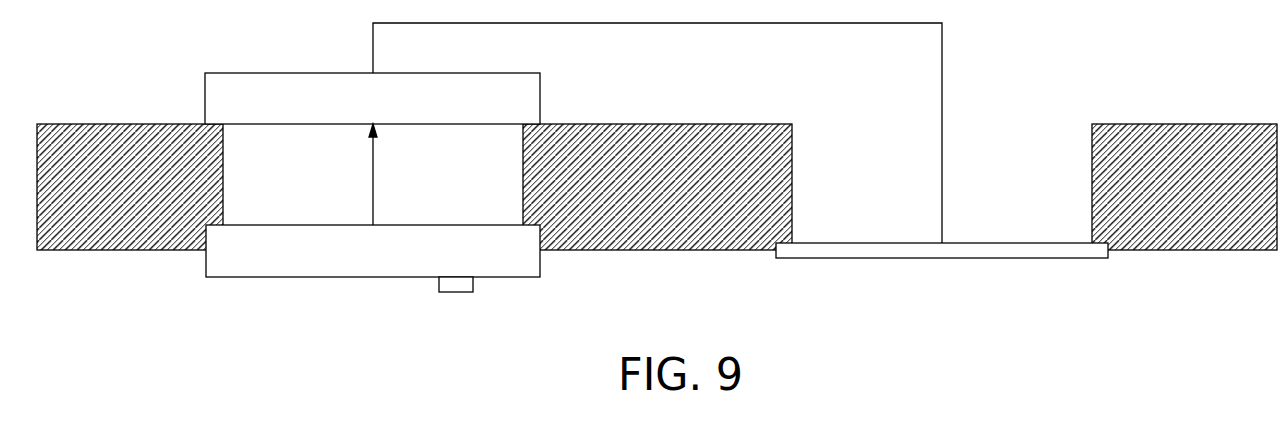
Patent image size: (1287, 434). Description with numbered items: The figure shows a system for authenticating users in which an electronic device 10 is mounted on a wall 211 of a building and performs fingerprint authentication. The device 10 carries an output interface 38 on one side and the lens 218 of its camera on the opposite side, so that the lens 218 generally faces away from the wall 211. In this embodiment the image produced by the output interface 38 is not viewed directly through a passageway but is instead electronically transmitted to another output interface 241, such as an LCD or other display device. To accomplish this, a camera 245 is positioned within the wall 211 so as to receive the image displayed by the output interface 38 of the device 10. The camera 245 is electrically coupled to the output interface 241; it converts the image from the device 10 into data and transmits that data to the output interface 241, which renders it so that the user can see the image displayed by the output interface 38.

The electronic device 10 is at (317, 278).
The output interface 38 is at (342, 222).
The wall 211 is at (128, 251).
The lens 218 is at (457, 293).
The output interface 241 is at (1062, 241).
The camera 245 is at (540, 80).